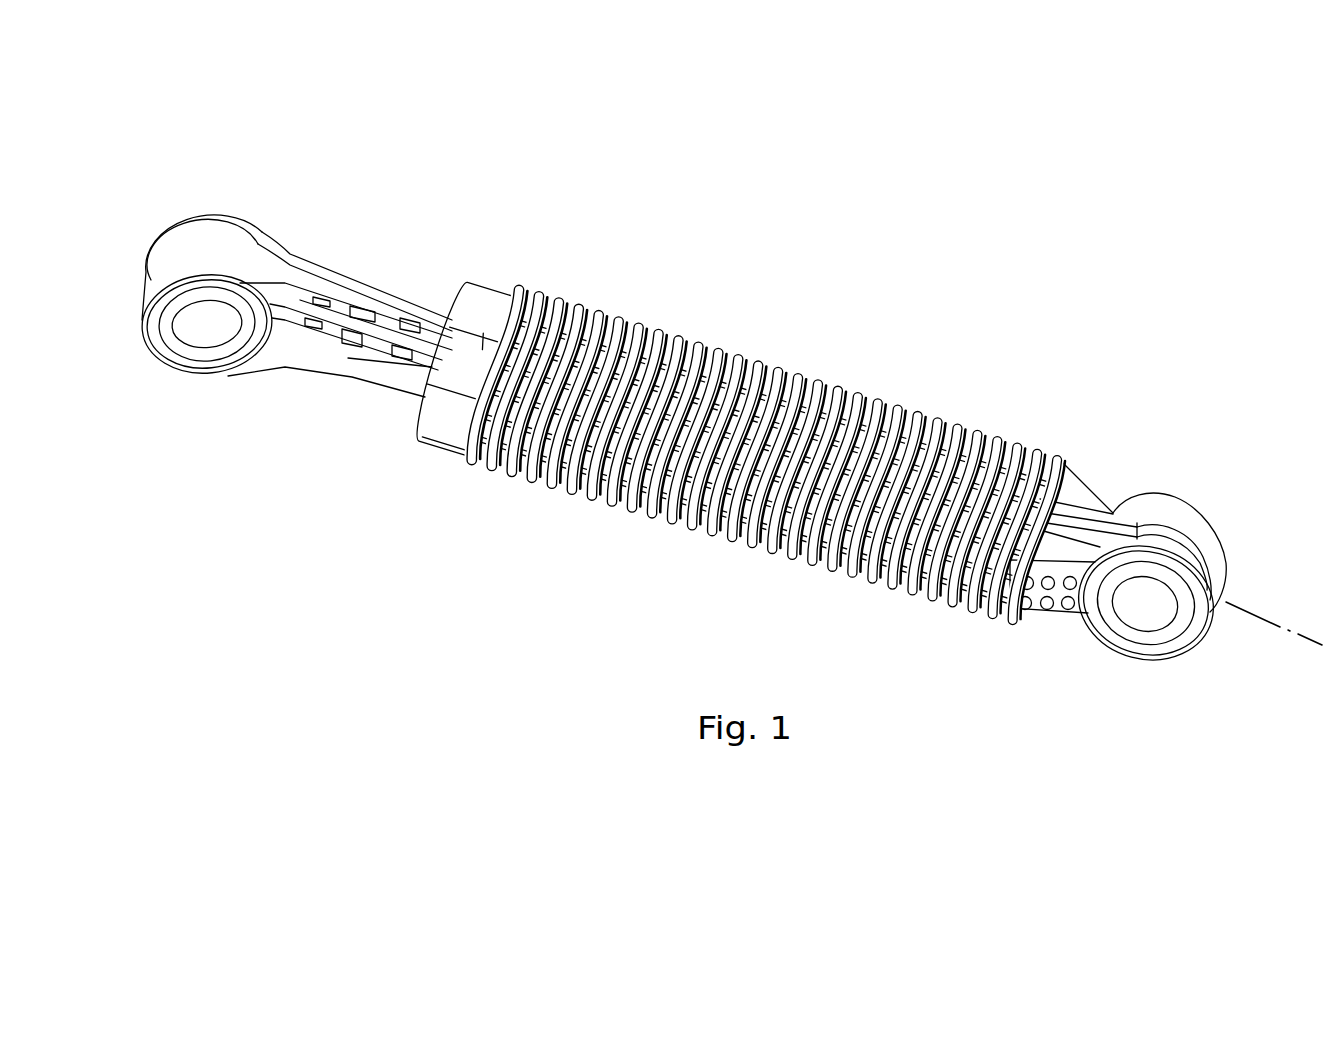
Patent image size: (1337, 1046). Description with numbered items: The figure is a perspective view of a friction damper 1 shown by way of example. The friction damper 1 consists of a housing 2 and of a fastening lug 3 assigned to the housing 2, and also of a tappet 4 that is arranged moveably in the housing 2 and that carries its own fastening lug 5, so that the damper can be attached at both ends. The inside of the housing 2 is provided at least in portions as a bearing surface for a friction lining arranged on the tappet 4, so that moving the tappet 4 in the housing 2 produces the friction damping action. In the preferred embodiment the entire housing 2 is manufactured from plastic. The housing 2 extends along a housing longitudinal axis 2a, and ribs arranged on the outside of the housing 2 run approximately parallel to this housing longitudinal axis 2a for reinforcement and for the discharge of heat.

The friction damper 1 is at (780, 143).
The housing 2 is at (842, 333).
The housing longitudinal axis 2a is at (1262, 617).
The fastening lug 3 is at (1118, 662).
The tappet 4 is at (413, 250).
The fastening lug 5 is at (187, 387).